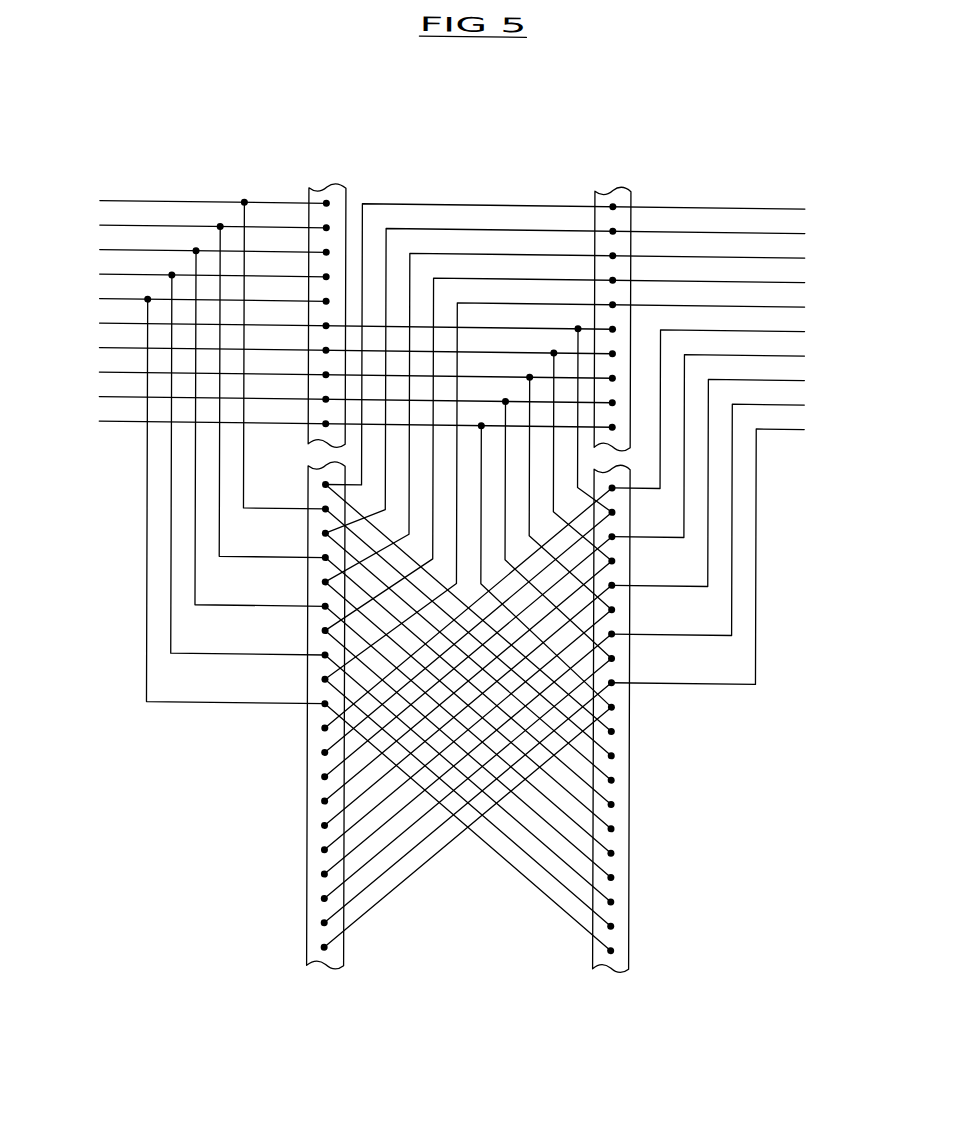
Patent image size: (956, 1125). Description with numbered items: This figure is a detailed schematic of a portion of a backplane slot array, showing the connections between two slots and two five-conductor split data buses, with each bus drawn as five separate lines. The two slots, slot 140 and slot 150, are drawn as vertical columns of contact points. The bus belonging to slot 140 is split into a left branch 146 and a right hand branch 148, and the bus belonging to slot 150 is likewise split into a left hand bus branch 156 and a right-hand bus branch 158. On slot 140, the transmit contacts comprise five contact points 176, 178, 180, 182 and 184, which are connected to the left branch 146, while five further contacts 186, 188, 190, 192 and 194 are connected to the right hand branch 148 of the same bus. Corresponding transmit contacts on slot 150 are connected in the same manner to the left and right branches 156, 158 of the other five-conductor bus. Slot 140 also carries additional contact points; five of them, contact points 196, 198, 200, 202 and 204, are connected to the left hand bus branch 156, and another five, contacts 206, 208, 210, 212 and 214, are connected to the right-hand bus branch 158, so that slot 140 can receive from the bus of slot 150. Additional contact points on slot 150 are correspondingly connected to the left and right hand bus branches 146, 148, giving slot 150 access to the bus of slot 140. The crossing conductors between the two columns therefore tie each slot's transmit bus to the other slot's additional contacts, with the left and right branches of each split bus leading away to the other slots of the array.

The slot 140 is at (320, 178).
The slot 150 is at (606, 178).
The left branch of five-conductor bus 146 is at (95, 195).
The right hand branch of five-conductor bus 148 is at (808, 195).
The left hand bus branch 156 is at (95, 318).
The right-hand bus branch 158 is at (808, 318).
The contact point 176 is at (322, 509).
The contact point 178 is at (322, 558).
The contact point 180 is at (322, 606).
The contact point 182 is at (322, 655).
The contact point 184 is at (322, 704).
The contact 186 is at (322, 484).
The contact 188 is at (322, 533).
The contact 190 is at (322, 582).
The contact 192 is at (322, 631).
The contact 194 is at (322, 679).
The contact point 196 is at (322, 752).
The contact point 198 is at (322, 801).
The contact point 200 is at (322, 850).
The contact point 202 is at (322, 898).
The contact point 204 is at (322, 947).
The contact 206 is at (322, 728).
The contact 208 is at (322, 777).
The contact 210 is at (322, 825).
The contact 212 is at (322, 874).
The contact 214 is at (322, 923).